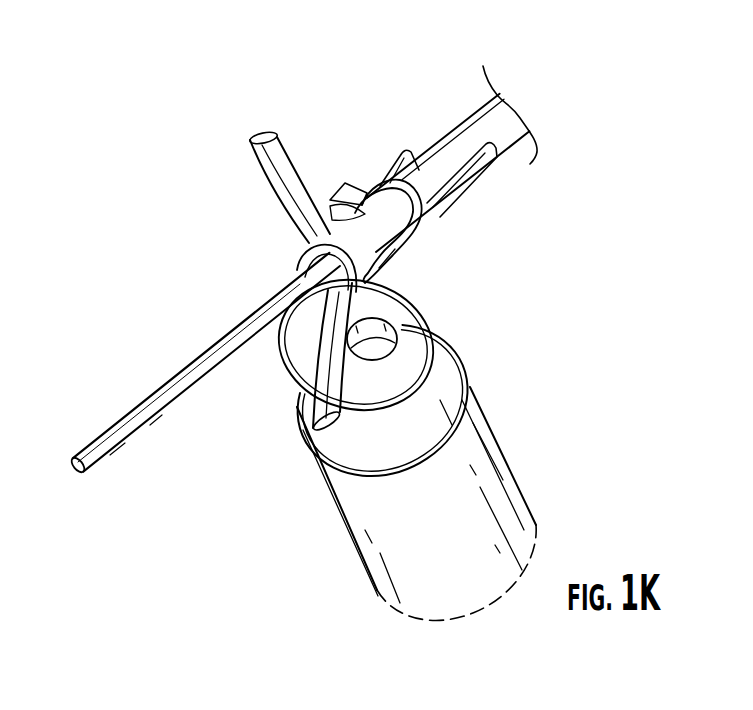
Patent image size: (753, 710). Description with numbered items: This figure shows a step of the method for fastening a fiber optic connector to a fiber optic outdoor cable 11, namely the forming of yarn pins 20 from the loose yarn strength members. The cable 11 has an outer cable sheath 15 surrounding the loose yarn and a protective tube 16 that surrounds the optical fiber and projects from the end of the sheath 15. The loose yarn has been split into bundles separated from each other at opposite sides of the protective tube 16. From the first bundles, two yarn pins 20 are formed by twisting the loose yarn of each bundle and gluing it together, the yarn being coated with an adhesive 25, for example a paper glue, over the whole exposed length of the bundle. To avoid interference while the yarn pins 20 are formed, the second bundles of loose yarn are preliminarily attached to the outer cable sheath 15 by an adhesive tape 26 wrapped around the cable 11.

The fiber optic outdoor cable 11 is at (466, 103).
The outer cable sheath 15 is at (507, 115).
The protective tube 16 is at (138, 415).
The yarn pin 20 is at (282, 172).
The adhesive tape 26 is at (405, 238).
The adhesive 25 is at (400, 332).